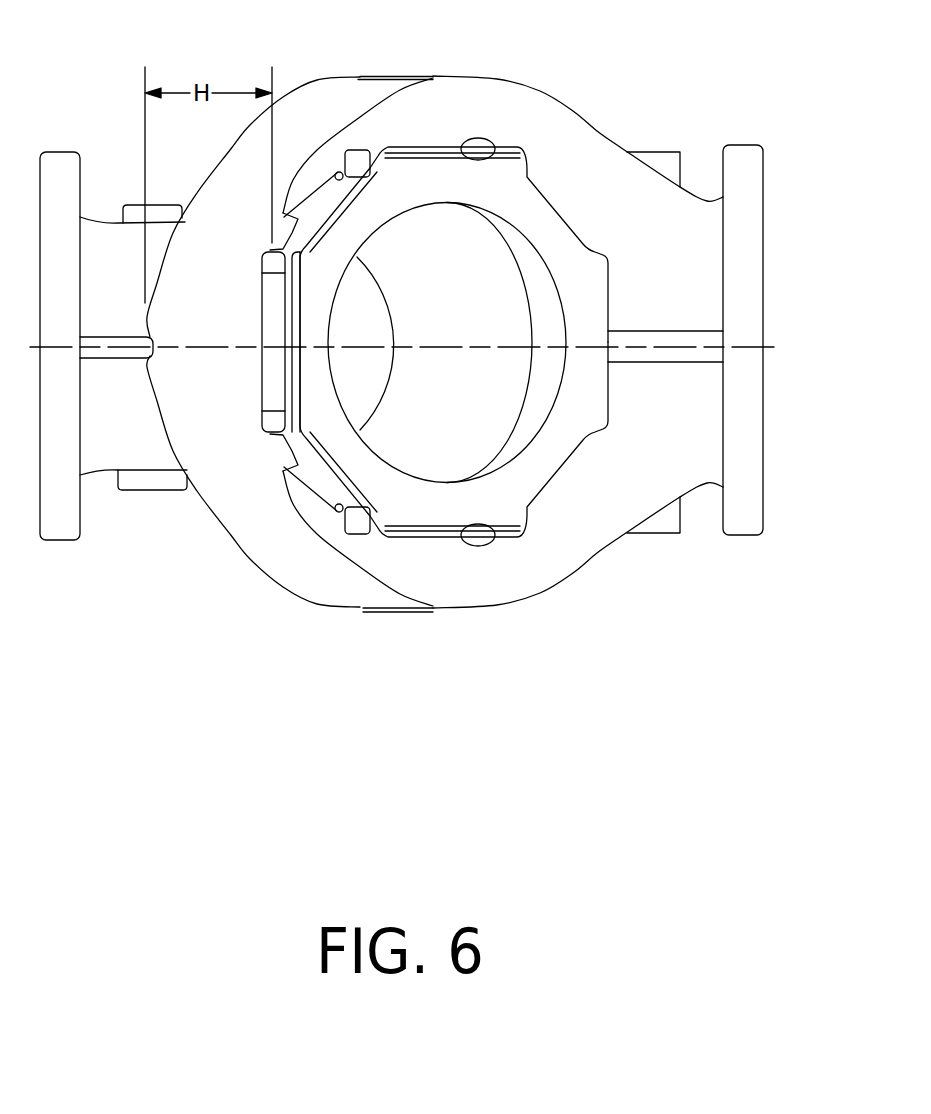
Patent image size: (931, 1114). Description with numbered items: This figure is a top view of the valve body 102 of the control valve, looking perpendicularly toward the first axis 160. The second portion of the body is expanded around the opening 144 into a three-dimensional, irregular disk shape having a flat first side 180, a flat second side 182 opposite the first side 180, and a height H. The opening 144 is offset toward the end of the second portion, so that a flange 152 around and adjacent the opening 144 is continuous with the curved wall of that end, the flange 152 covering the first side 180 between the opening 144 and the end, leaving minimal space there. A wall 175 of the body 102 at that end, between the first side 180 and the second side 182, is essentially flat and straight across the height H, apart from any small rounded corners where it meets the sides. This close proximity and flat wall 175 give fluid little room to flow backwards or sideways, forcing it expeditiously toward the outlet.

The valve body 102 is at (381, 402).
The opening 144 is at (478, 297).
The flange 152 is at (437, 178).
The first axis 160 is at (767, 347).
The wall 175 is at (318, 102).
The first side 180 is at (543, 568).
The second side 182 is at (195, 517).